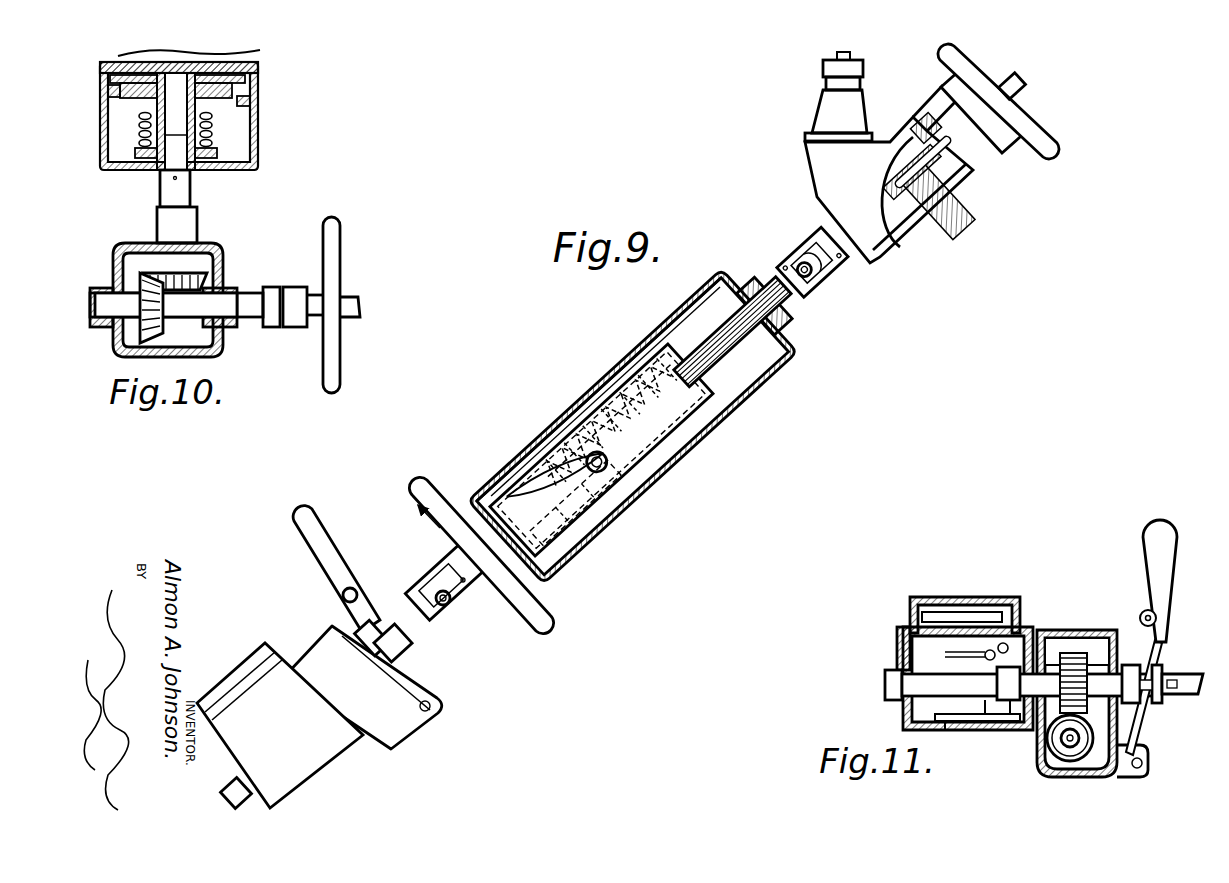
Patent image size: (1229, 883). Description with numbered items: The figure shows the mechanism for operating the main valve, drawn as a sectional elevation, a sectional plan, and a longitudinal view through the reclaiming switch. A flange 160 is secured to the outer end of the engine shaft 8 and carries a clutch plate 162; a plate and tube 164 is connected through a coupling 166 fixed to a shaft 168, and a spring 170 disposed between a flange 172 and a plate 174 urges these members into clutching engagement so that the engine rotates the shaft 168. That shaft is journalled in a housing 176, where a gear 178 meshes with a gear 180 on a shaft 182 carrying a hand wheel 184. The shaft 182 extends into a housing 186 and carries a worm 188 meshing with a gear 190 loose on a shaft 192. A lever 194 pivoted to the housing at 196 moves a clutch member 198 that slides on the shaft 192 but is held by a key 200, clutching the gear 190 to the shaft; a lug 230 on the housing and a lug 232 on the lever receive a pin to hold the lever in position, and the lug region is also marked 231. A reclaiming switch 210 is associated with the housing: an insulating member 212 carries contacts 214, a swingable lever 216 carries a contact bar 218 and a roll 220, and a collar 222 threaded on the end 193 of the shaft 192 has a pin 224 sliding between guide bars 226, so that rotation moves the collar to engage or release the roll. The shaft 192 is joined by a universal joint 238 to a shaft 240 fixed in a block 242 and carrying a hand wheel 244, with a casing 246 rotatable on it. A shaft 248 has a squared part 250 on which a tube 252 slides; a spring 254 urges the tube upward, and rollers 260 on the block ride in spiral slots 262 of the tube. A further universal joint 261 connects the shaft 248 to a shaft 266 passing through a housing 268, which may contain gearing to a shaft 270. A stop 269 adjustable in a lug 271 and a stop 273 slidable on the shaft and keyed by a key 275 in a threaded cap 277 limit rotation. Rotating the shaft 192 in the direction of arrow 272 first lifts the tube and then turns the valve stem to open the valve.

In FIG. 10, the shaft 8 is at (258, 62).
In FIG. 10, the flange 160 is at (262, 80).
In FIG. 10, the clutch plate 162 is at (240, 110).
In FIG. 10, the plate and tube 164 is at (104, 82).
In FIG. 10, the coupling 166 is at (160, 182).
In FIG. 10, the shaft 168 is at (172, 196).
In FIG. 10, the spring 170 is at (139, 118).
In FIG. 10, the flange 172 is at (135, 156).
In FIG. 10, the plate 174 is at (244, 120).
In FIG. 10, the housing 176 is at (122, 270).
In FIG. 10, the gear 178 is at (205, 280).
In FIG. 10, the gear 180 is at (140, 330).
In FIG. 10, the shaft 182 is at (270, 306).
In FIG. 11, the shaft 182 is at (1065, 762).
In FIG. 10, the hand wheel 184 is at (336, 240).
In FIG. 9, the housing 186 is at (400, 732).
In FIG. 11, the housing 186 is at (1045, 772).
In FIG. 11, the worm 188 is at (1072, 750).
In FIG. 11, the gear 190 is at (1062, 712).
In FIG. 9, the shaft 192 is at (392, 630).
In FIG. 11, the shaft 192 is at (1038, 648).
In FIG. 11, the end of shaft 193 is at (945, 731).
In FIG. 9, the lever 194 is at (342, 562).
In FIG. 11, the lever 194 is at (1160, 580).
In FIG. 11, the pivot 196 is at (1135, 770).
In FIG. 9, the clutch member 198 is at (398, 648).
In FIG. 11, the clutch member 198 is at (1158, 705).
In FIG. 11, the key 200 is at (1188, 674).
In FIG. 9, the reclaiming switch 210 is at (308, 755).
In FIG. 11, the reclaiming switch 210 is at (893, 660).
In FIG. 11, the insulating member 212 is at (962, 617).
In FIG. 11, the contacts 214 is at (945, 610).
In FIG. 11, the swingable lever 216 is at (982, 656).
In FIG. 11, the contact bar 218 is at (910, 672).
In FIG. 11, the roll 220 is at (1005, 692).
In FIG. 11, the collar 222 is at (985, 716).
In FIG. 11, the pin 224 is at (1010, 716).
In FIG. 11, the guide bars 226 is at (935, 718).
In FIG. 11, the lug 230 is at (1142, 620).
In FIG. 11, the pin 231 is at (1146, 610).
In FIG. 11, the lug 232 is at (1160, 632).
In FIG. 9, the universal joint 238 is at (450, 614).
In FIG. 9, the shaft 240 is at (632, 426).
In FIG. 9, the block 242 is at (601, 450).
In FIG. 9, the hand wheel 244 is at (440, 492).
In FIG. 9, the casing 246 is at (599, 389).
In FIG. 9, the shaft 248 is at (764, 306).
In FIG. 9, the squared part 250 is at (732, 332).
In FIG. 9, the tube 252 is at (611, 420).
In FIG. 9, the spring 254 is at (605, 391).
In FIG. 9, the rollers 260 is at (597, 462).
In FIG. 9, the universal joint 261 is at (812, 262).
In FIG. 9, the slots 262 is at (555, 475).
In FIG. 9, the shaft 266 is at (973, 130).
In FIG. 9, the housing 268 is at (876, 256).
In FIG. 9, the stop 269 is at (928, 214).
In FIG. 9, the shaft 270 is at (838, 55).
In FIG. 9, the lug 271 is at (894, 246).
In FIG. 9, the arrow 272 is at (414, 525).
In FIG. 9, the stop 273 is at (945, 202).
In FIG. 9, the key 275 is at (915, 132).
In FIG. 9, the cap 277 is at (945, 108).